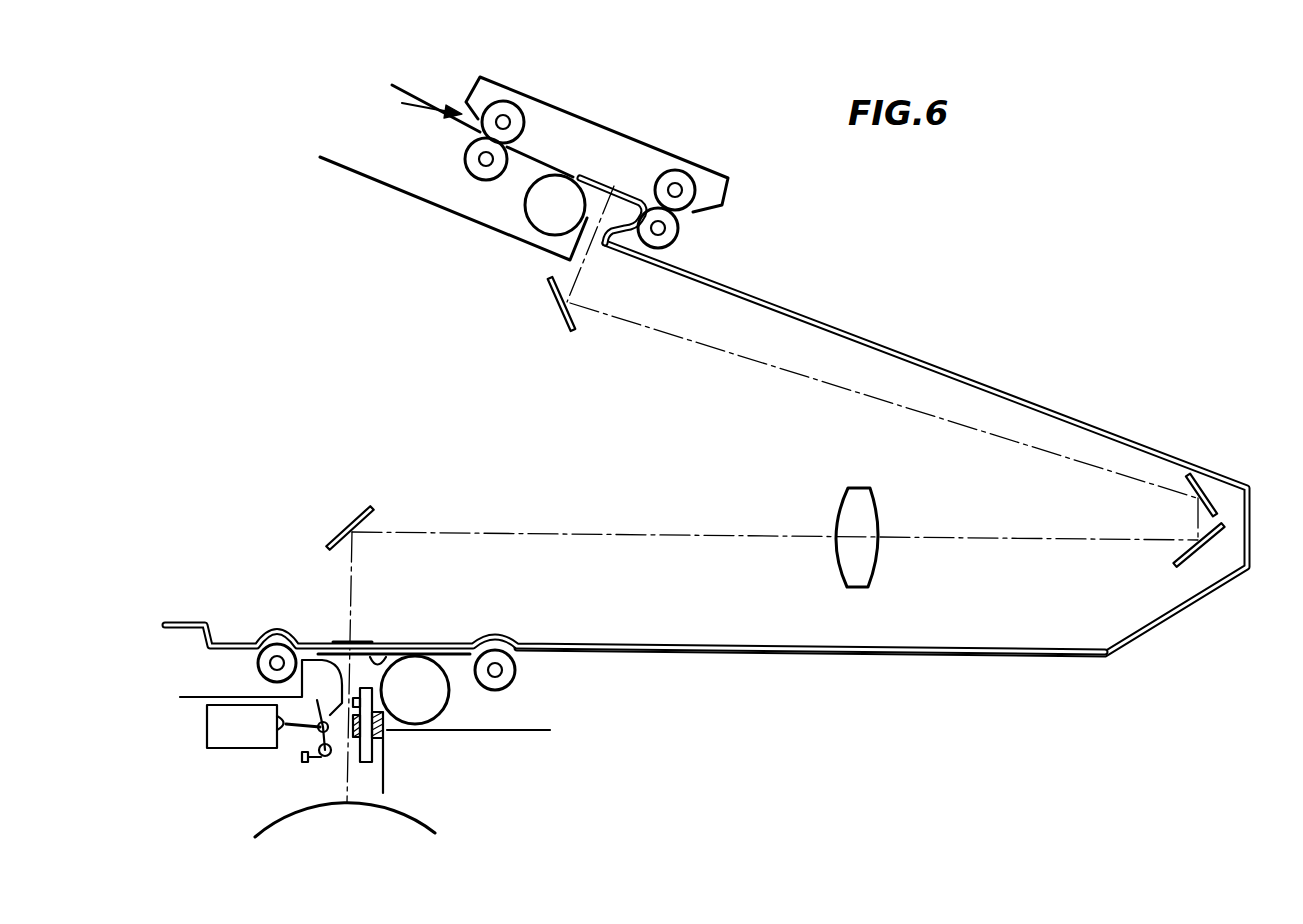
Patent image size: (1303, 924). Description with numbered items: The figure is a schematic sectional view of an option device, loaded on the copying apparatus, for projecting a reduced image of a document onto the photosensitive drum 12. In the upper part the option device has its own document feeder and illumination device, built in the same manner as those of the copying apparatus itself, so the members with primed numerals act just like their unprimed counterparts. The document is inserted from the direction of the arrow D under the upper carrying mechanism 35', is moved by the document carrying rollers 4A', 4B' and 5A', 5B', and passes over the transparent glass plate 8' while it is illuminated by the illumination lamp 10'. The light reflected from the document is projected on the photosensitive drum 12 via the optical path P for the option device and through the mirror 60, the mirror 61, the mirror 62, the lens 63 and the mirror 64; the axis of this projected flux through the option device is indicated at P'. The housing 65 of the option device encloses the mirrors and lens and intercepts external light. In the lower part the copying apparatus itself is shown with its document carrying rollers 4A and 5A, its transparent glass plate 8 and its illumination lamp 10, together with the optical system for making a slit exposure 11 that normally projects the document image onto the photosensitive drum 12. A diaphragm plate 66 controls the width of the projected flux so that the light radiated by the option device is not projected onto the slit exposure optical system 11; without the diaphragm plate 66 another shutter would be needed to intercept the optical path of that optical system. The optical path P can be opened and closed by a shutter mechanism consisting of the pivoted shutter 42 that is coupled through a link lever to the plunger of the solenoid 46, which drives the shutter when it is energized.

The upper carrying mechanism 35' is at (597, 134).
The document carrying roller 4B' is at (541, 113).
The document carrying roller 4A' is at (462, 196).
The transparent glass plate 8' is at (635, 179).
The document carrying roller 5B' is at (707, 174).
The document carrying roller 5A' is at (692, 232).
The illumination lamp 10' is at (540, 227).
The arrow D is at (420, 98).
The mirror 60 is at (558, 317).
The housing 65 is at (818, 323).
The mirror 61 is at (1203, 492).
The mirror 62 is at (1212, 535).
The lens 63 is at (872, 577).
The mirror 64 is at (365, 507).
The reading position P' is at (329, 667).
The diaphragm plate 66 is at (333, 643).
The transparent glass plate 8 is at (635, 631).
The document carrying roller 5A is at (246, 668).
The document carrying roller 4A is at (519, 672).
The illumination lamp 10 is at (437, 690).
The solenoid 46 is at (220, 750).
The shutter 42 is at (310, 720).
The optical path P is at (346, 765).
The optical system for making a slit exposure 11 is at (370, 747).
The photosensitive drum 12 is at (403, 813).